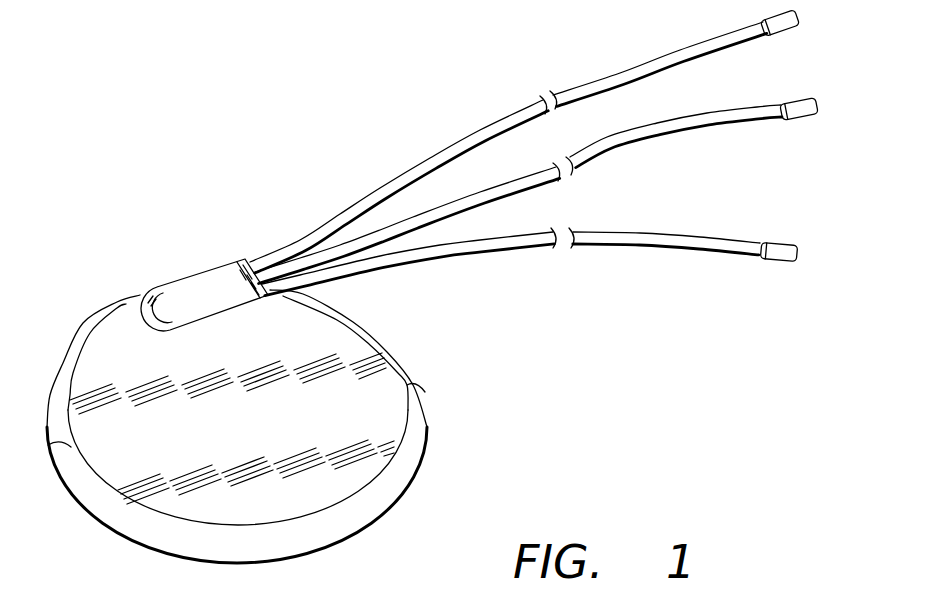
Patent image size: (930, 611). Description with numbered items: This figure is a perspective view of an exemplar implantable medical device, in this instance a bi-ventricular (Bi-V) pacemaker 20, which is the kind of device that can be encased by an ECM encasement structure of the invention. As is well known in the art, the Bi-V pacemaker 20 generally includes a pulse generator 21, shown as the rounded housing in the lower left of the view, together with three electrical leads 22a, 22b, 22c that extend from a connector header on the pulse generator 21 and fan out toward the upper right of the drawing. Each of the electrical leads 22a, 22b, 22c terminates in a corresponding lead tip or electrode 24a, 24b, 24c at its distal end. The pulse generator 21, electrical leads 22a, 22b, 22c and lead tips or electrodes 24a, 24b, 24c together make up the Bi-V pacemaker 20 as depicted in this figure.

The bi-ventricular (Bi-V) pacemaker 20 is at (246, 231).
The pulse generator 21 is at (428, 404).
The electrical lead 22a is at (437, 259).
The electrical lead 22b is at (497, 188).
The electrical lead 22c is at (414, 168).
The lead tip or electrode 24a is at (777, 263).
The lead tip or electrode 24b is at (793, 120).
The lead tip or electrode 24c is at (781, 35).